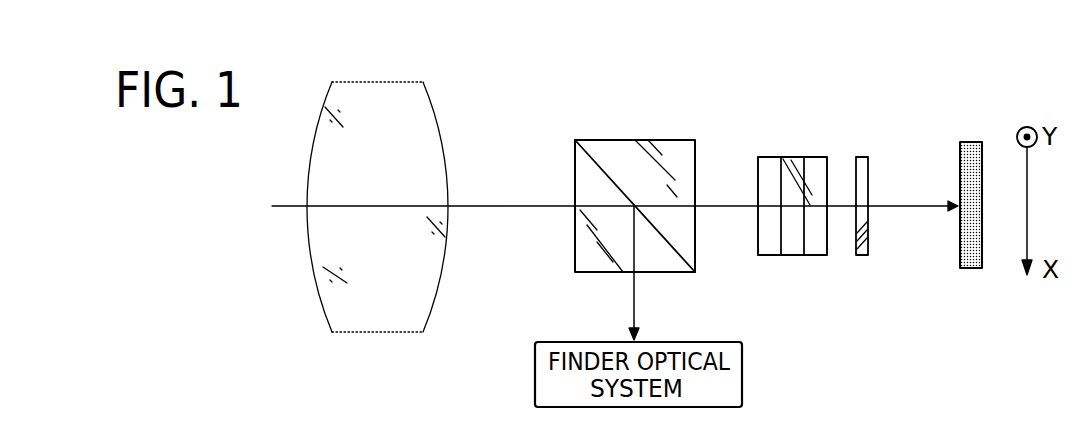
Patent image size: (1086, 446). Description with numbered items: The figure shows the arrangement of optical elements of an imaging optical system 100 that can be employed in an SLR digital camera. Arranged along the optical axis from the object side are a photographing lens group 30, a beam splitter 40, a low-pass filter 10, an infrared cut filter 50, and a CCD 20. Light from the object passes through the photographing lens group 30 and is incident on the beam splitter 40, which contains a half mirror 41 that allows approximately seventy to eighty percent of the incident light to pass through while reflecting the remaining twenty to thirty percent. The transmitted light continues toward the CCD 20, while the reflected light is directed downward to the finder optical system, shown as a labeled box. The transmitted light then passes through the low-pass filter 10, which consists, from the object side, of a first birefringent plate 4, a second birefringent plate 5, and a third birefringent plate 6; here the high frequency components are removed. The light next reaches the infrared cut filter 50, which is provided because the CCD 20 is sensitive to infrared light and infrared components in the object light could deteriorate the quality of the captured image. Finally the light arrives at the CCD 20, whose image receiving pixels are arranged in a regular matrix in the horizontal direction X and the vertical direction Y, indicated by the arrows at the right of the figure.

The imaging optical system 100 is at (680, 35).
The photographing lens group 30 is at (377, 308).
The beam splitter 40 is at (670, 155).
The half mirror 41 is at (600, 153).
The LPF (low-pass filter) 10 is at (833, 102).
The first birefringent plate 4 is at (768, 157).
The second birefringent plate 5 is at (792, 157).
The third birefringent plate 6 is at (818, 157).
The infrared cut filter 50 is at (857, 157).
The CCD 20 is at (970, 150).